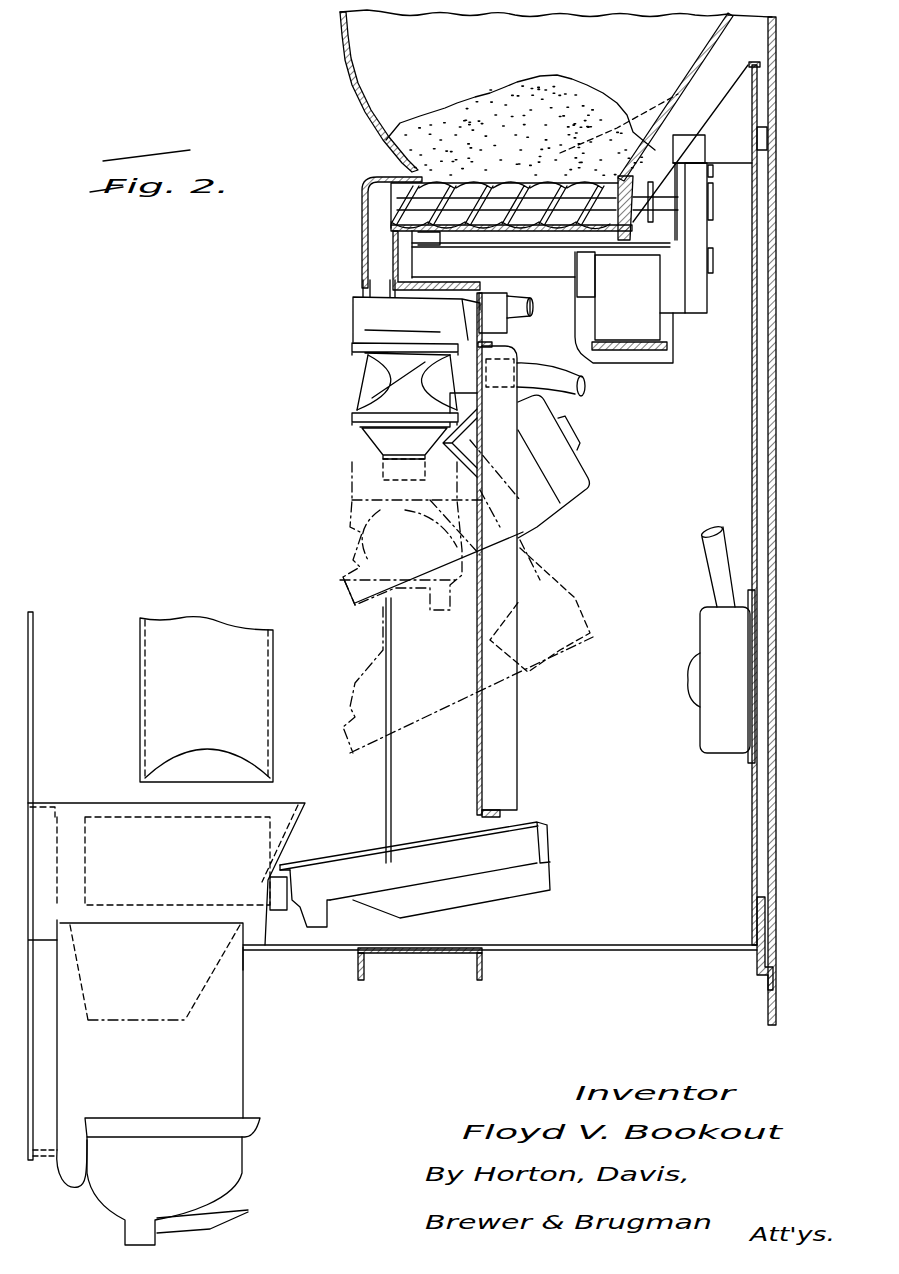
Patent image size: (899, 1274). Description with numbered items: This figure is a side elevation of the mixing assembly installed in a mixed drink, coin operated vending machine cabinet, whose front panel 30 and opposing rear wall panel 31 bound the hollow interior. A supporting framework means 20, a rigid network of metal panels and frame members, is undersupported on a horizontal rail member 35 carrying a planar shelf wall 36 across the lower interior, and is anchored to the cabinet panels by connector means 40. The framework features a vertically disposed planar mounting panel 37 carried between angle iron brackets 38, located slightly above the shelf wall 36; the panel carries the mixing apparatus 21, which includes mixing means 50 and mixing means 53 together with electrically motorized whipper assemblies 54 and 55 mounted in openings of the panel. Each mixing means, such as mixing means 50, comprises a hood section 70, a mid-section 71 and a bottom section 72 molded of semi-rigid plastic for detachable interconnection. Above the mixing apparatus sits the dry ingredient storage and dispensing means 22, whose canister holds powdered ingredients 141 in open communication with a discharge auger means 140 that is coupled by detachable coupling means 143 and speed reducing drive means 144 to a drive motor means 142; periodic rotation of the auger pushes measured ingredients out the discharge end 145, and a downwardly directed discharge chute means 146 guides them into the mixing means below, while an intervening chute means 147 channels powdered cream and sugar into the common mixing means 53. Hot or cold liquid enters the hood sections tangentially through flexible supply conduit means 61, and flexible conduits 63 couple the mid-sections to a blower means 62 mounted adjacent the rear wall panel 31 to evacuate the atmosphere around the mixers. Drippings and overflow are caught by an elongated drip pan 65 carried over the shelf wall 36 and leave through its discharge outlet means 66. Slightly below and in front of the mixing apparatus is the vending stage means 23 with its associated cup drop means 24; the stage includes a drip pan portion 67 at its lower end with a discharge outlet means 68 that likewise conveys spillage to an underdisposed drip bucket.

The supporting framework means 20 is at (628, 958).
The mixing apparatus 21 is at (330, 440).
The dry ingredient storage and dispensing means 22 is at (335, 46).
The vending stage means 23 is at (258, 1018).
The cup drop means 24 is at (135, 650).
The front panel 30 is at (35, 732).
The rear wall panel 31 is at (775, 756).
The horizontal rail member 35 is at (358, 975).
The planar shelf wall 36 is at (505, 947).
The mounting panel 37 is at (480, 734).
The angle iron brackets 38 is at (512, 735).
The connector means 40 is at (767, 905).
The mixing means 50 is at (340, 408).
The mixing means 53 is at (362, 543).
The whipper assembly 54 is at (552, 497).
The whipper assembly 55 is at (578, 657).
The supply conduit means 61 is at (520, 309).
The blower means 62 is at (698, 708).
The flexible conduits 63 is at (568, 381).
The drip pan 65 is at (338, 855).
The discharge outlet means 66 is at (330, 916).
The drip pan portion 67 is at (205, 1168).
The discharge outlet means 68 is at (240, 1230).
The hood section 70 is at (372, 308).
The mid-section 71 is at (394, 391).
The bottom section 72 is at (400, 432).
The discharge auger means 140 is at (503, 188).
The powdered ingredients 141 is at (568, 92).
The drive motor means 142 is at (648, 327).
The detachable coupling means 143 is at (705, 110).
The speed reducing drive means 144 is at (692, 265).
The discharge end 145 is at (362, 202).
The discharge chute means 146 is at (362, 260).
The chute means 147 is at (360, 365).